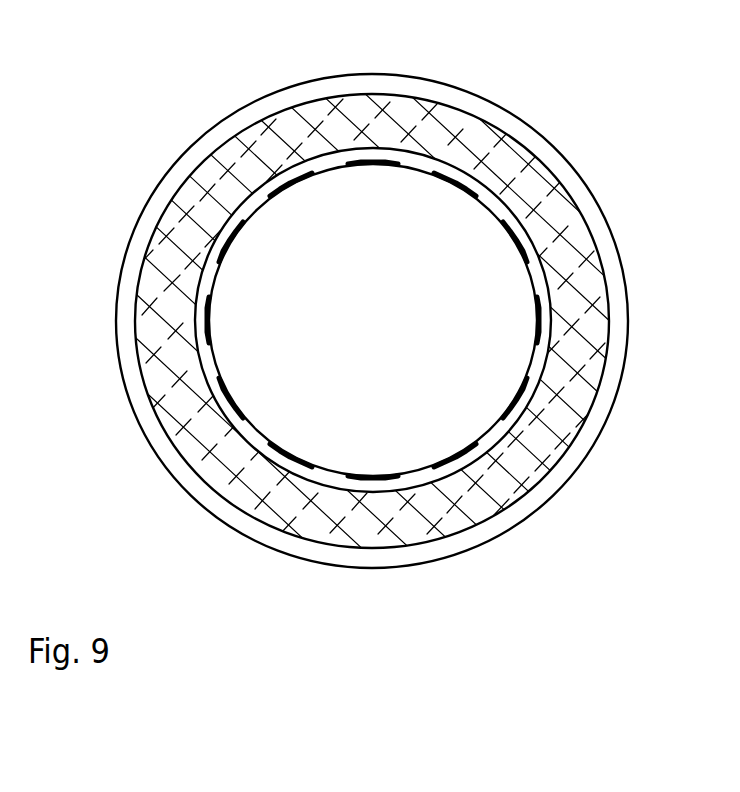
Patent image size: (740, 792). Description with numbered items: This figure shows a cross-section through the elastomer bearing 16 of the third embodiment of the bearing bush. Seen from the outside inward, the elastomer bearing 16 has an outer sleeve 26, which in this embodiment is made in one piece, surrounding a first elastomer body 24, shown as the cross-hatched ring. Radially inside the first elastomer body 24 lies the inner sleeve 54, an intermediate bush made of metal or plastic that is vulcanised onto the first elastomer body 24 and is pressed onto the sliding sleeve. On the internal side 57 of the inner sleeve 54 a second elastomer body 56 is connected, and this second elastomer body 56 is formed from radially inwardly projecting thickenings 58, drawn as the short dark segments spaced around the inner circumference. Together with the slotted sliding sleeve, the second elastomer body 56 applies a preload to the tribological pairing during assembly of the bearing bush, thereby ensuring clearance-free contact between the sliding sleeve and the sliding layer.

The elastomer bearing 16 is at (547, 121).
The first elastomer body 24 is at (410, 118).
The outer sleeve 26 is at (352, 92).
The inner sleeve 54 is at (545, 330).
The second elastomer body 56 is at (527, 398).
The internal side 57 is at (252, 207).
The thickenings 58 is at (213, 408).